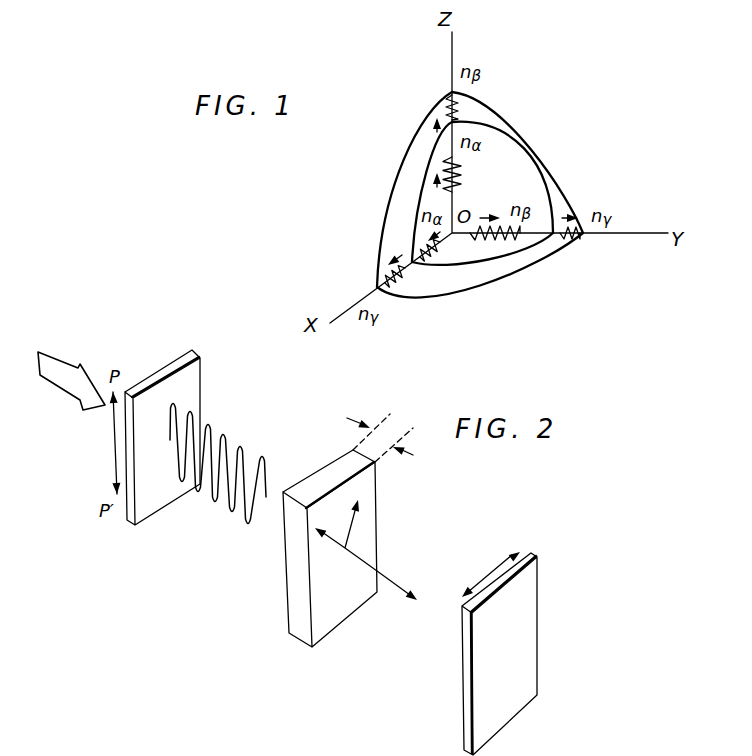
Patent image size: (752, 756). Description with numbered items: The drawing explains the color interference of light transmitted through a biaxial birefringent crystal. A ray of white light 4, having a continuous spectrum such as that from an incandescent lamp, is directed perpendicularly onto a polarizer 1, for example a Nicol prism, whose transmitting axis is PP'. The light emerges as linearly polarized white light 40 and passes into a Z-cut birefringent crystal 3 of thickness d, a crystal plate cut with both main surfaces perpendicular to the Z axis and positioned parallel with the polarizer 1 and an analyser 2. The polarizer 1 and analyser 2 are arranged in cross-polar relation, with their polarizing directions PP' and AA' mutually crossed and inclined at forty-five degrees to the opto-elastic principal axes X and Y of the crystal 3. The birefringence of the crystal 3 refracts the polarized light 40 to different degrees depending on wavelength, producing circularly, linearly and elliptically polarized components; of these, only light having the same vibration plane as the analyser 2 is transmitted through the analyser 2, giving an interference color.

The polarizer 1 is at (193, 355).
The analyser 2 is at (533, 592).
The Z-cut birefringent crystal 3 is at (300, 635).
The ray of light 4 is at (51, 365).
The linearly polarized white light 40 is at (280, 455).